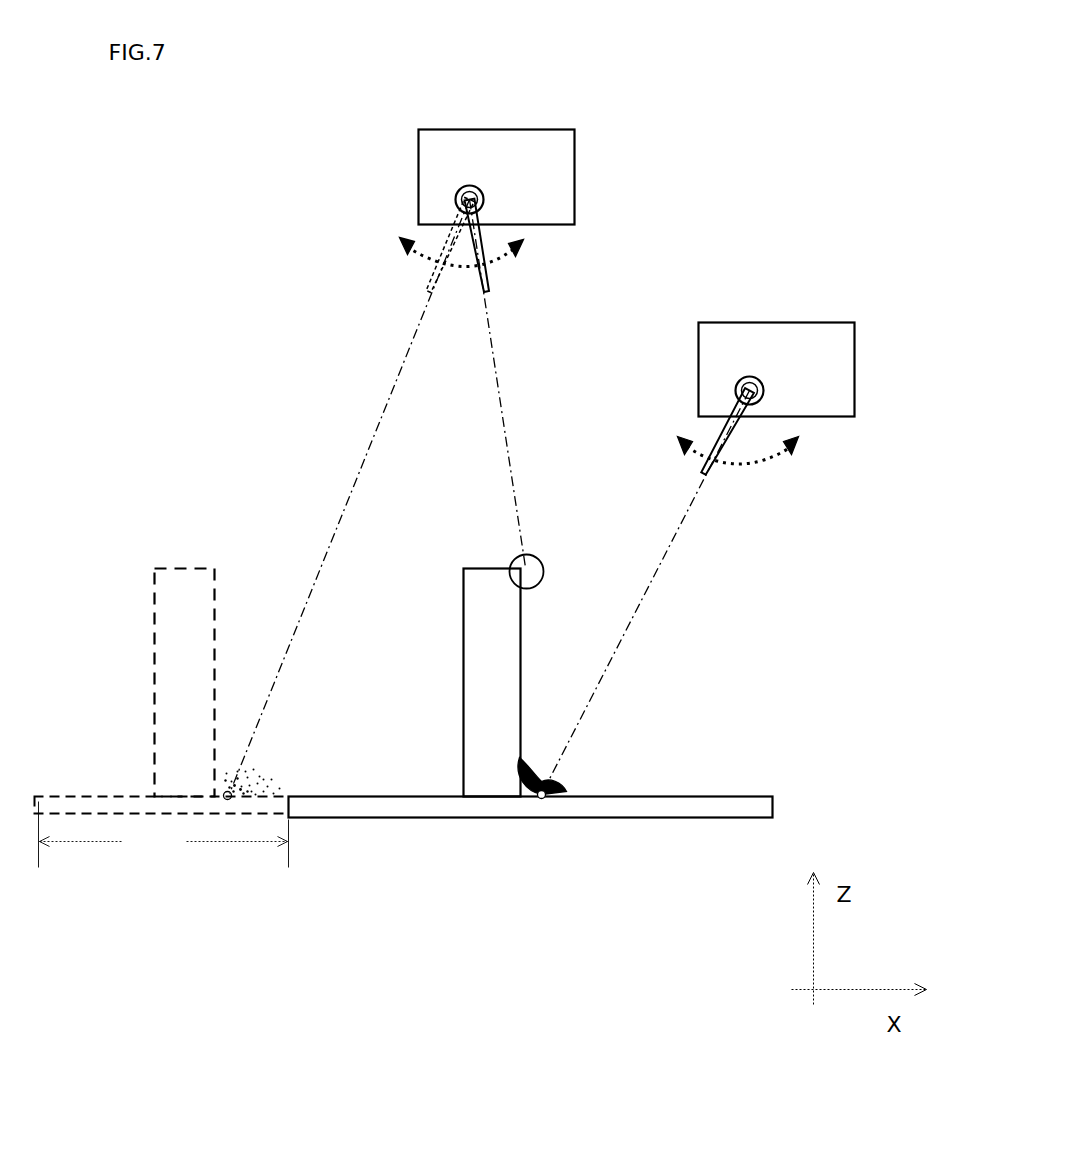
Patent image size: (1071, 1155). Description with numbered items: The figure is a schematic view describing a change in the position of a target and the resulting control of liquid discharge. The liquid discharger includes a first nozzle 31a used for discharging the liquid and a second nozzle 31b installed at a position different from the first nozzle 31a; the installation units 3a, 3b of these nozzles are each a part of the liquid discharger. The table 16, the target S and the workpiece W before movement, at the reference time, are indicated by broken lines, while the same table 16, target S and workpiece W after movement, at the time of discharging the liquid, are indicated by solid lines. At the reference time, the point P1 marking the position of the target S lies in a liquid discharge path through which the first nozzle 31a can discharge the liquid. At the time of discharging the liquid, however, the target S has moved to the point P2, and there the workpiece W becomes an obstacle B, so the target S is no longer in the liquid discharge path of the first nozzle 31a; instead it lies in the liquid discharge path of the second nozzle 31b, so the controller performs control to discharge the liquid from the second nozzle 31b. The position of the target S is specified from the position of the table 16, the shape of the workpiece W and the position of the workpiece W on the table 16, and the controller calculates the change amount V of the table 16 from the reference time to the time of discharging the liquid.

The installation unit of the first nozzle 3a is at (573, 182).
The installation unit of the second nozzle 3b is at (853, 373).
The first nozzle 31a is at (448, 238).
The second nozzle 31b is at (717, 432).
The table 16 is at (720, 817).
The workpiece W is at (520, 653).
The obstacle B is at (512, 557).
The target S is at (292, 778).
The change amount of the table V is at (164, 835).
The point P1 (X1, Y1) P1 is at (228, 798).
The point P2 (X2, Y2) P2 is at (545, 797).